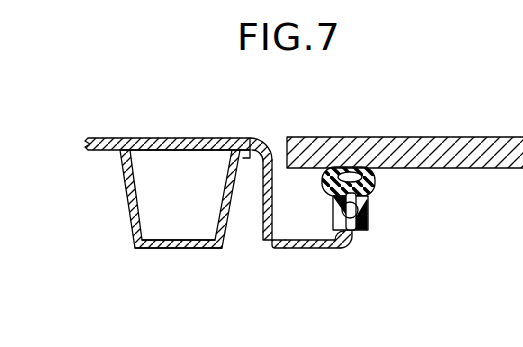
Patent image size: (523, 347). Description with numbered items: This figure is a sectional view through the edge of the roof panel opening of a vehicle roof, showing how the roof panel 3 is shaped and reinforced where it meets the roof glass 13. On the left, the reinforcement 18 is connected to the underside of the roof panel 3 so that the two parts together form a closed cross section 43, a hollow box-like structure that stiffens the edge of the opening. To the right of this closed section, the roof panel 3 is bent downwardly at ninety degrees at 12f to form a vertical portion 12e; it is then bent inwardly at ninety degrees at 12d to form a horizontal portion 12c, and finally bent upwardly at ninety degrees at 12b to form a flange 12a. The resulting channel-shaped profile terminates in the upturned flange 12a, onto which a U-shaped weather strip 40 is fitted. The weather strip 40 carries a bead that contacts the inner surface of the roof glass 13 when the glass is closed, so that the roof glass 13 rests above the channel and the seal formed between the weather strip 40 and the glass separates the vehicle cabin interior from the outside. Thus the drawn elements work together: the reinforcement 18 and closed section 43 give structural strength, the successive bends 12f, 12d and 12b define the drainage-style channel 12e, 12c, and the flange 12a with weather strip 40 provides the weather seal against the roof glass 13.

The roof panel 3 is at (158, 138).
The closed cross section 43 is at (148, 193).
The reinforcement 18 is at (167, 252).
The first downward bend 12f is at (268, 137).
The downwardly bent portion 12e is at (262, 212).
The inward bend 12d is at (273, 249).
The inwardly bent portion 12c is at (315, 250).
The upward bend 12b is at (350, 250).
The flange 12a is at (357, 237).
The roof glass 13 is at (433, 140).
The U-shaped weather strip 40 is at (368, 204).